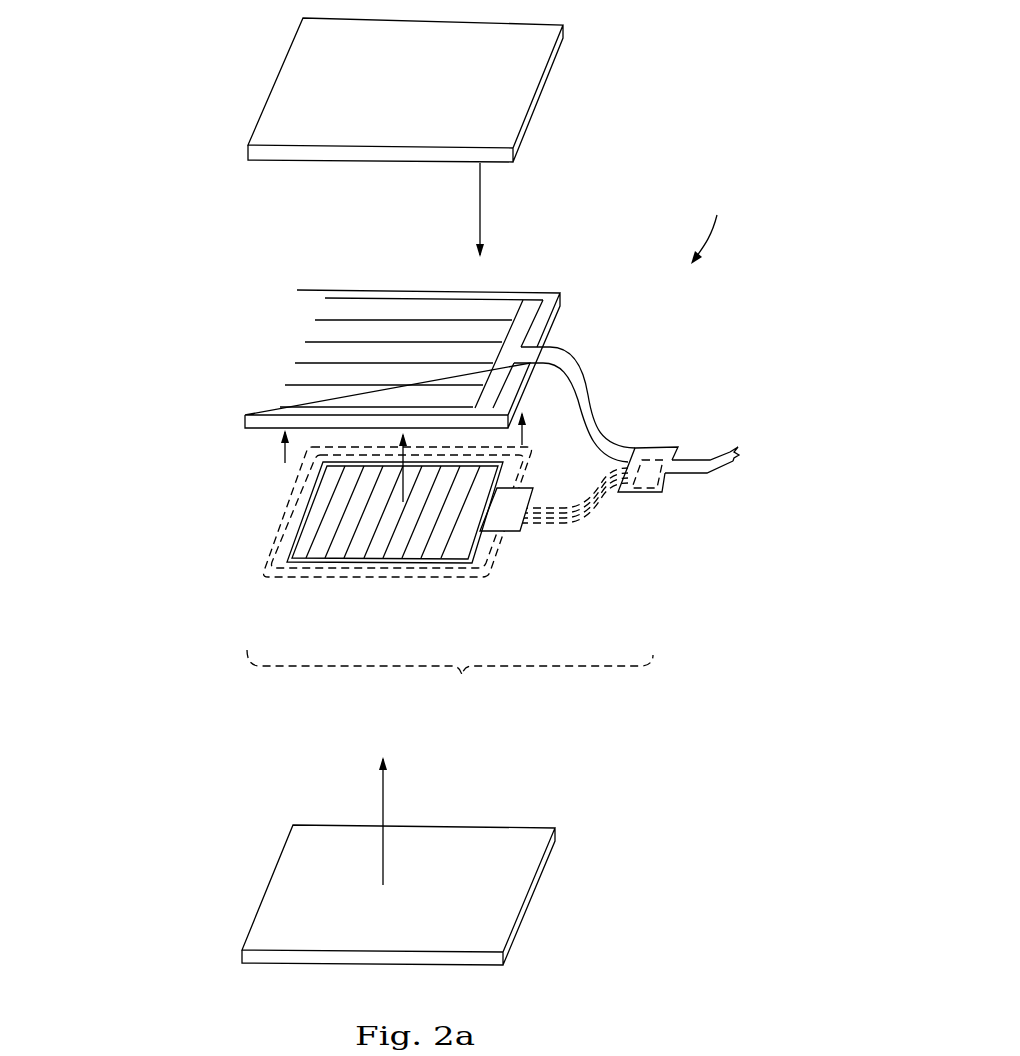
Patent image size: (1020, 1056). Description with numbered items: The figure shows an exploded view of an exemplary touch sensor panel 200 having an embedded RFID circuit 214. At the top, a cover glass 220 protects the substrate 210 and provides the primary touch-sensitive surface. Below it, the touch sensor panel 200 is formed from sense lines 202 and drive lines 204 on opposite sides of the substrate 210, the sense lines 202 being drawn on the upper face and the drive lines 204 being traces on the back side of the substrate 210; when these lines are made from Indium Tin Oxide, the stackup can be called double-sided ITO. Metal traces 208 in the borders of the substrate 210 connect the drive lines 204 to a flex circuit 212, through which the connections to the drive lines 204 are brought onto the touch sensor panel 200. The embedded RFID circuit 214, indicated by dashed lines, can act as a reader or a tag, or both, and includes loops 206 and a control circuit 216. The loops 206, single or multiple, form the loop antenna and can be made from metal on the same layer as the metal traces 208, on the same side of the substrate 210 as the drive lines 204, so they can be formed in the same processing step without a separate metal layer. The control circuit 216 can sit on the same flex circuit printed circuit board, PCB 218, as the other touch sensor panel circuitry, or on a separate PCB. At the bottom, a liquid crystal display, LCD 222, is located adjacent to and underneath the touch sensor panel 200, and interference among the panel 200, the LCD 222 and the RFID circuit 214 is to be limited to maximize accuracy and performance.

The touch sensor panel 200 is at (725, 189).
The sense lines 202 is at (362, 298).
The drive lines 204 is at (307, 513).
The loops 206 is at (497, 562).
The metal traces 208 is at (357, 562).
The substrate 210 is at (268, 362).
The flex circuit 212 is at (598, 386).
The embedded RFID circuit 214 is at (450, 727).
The control circuit 216 is at (665, 493).
The flex circuit printed circuit board (PCB) 218 is at (678, 447).
The cover glass 220 is at (405, 90).
The liquid crystal display (LCD) 222 is at (398, 895).